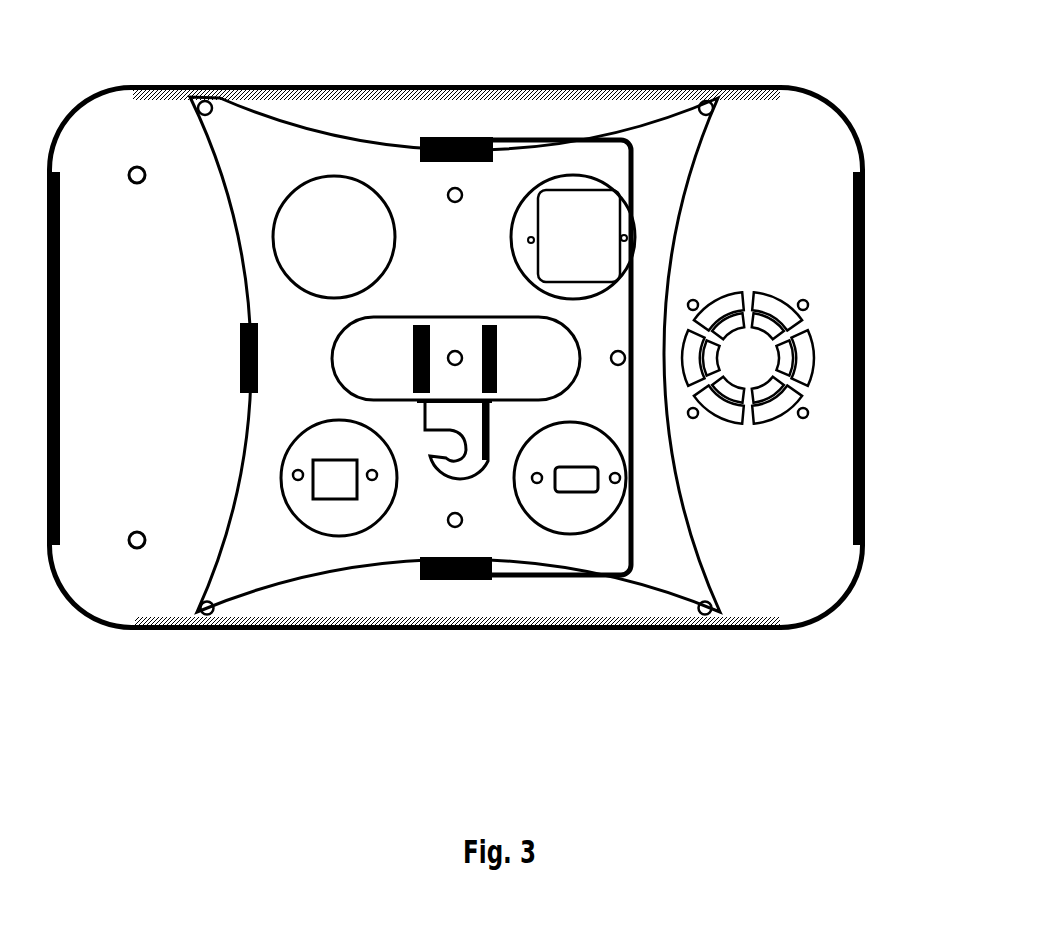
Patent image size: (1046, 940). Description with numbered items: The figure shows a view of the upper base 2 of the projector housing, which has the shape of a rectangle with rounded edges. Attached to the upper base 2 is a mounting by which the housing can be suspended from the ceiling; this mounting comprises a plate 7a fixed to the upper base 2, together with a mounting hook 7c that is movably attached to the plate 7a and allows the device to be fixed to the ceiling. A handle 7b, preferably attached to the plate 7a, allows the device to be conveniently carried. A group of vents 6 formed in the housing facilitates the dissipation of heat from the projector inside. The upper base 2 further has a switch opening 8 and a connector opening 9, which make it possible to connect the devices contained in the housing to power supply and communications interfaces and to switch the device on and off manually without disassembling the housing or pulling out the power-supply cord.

The upper base 2 is at (790, 558).
The group of vents 6 is at (793, 403).
The plate 7a is at (247, 563).
The handle 7b is at (540, 577).
The mounting hook 7c is at (466, 418).
The switch opening 8 is at (342, 480).
The connector opening 9 is at (573, 215).